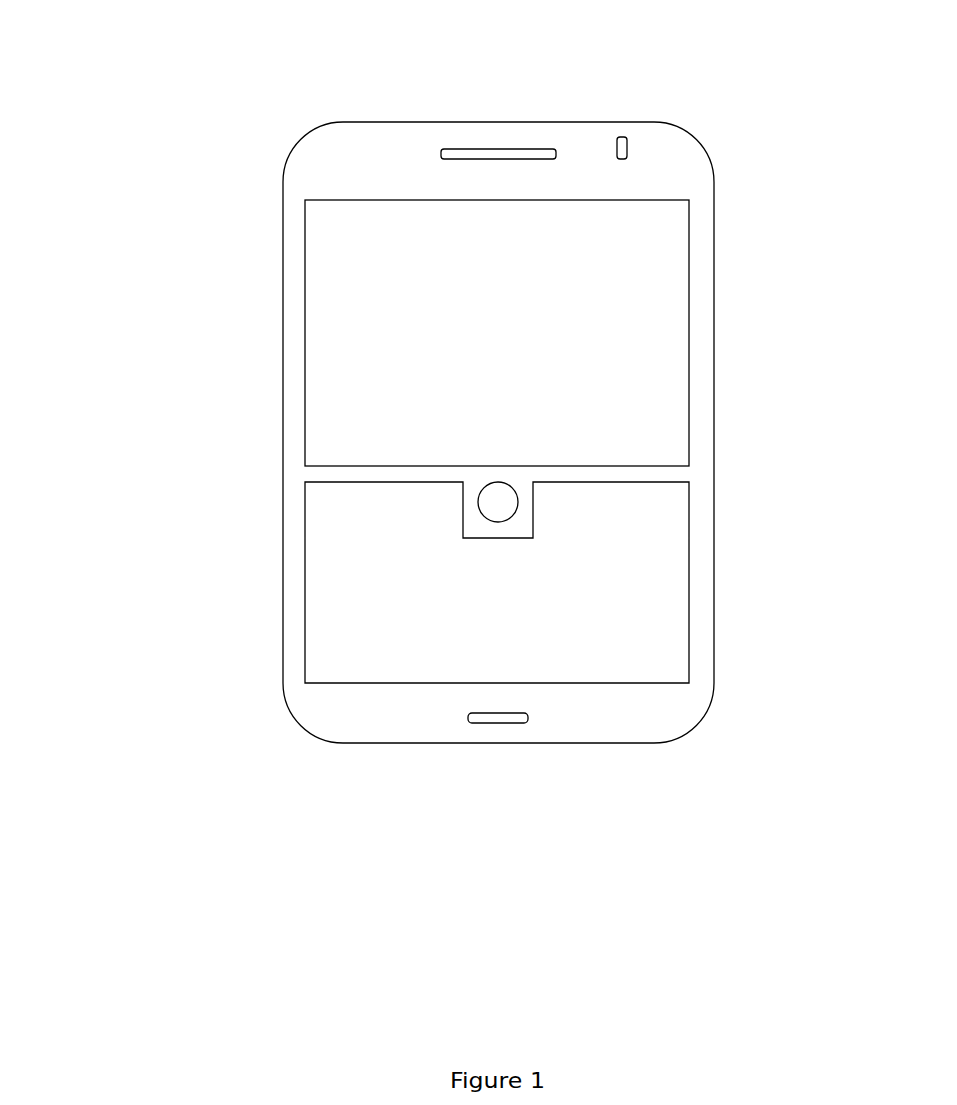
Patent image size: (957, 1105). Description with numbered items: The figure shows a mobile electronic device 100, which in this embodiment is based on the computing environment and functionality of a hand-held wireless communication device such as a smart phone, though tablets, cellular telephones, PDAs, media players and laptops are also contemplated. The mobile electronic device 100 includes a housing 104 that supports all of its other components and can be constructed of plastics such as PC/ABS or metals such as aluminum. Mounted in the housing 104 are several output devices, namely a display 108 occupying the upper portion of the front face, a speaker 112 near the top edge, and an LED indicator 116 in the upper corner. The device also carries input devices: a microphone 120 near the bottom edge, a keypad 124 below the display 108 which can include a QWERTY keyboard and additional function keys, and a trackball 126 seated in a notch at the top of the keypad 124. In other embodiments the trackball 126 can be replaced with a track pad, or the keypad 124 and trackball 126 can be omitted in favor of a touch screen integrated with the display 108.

The mobile electronic device 100 is at (174, 104).
The housing 104 is at (497, 122).
The display 108 is at (689, 332).
The speaker 112 is at (441, 153).
The LED indicator 116 is at (623, 122).
The microphone 120 is at (528, 718).
The keypad 124 is at (690, 582).
The trackball 126 is at (483, 485).